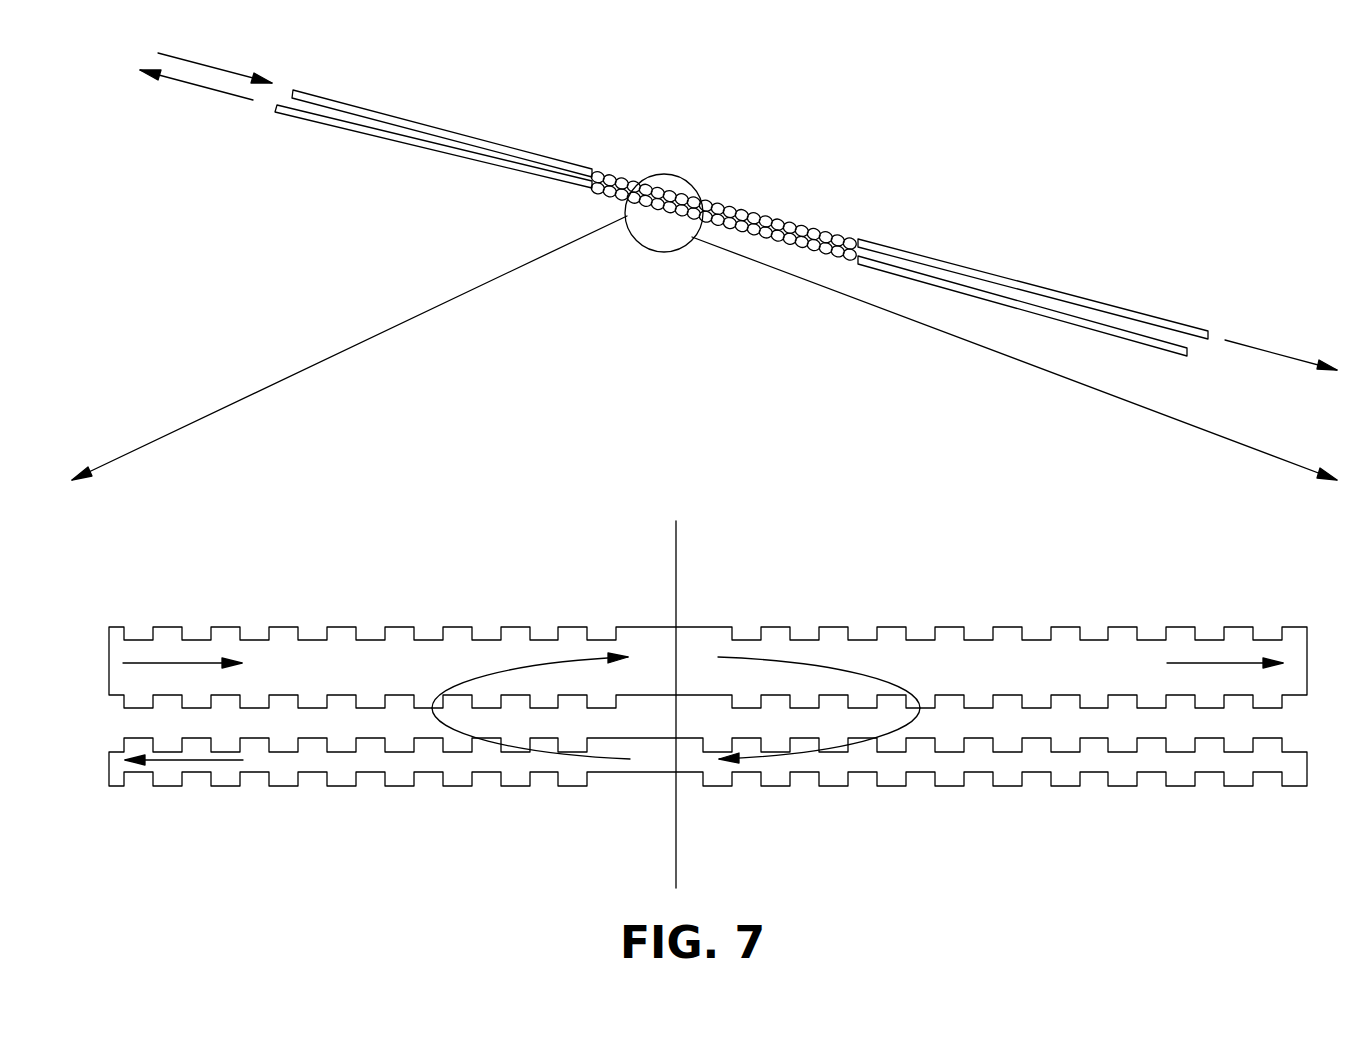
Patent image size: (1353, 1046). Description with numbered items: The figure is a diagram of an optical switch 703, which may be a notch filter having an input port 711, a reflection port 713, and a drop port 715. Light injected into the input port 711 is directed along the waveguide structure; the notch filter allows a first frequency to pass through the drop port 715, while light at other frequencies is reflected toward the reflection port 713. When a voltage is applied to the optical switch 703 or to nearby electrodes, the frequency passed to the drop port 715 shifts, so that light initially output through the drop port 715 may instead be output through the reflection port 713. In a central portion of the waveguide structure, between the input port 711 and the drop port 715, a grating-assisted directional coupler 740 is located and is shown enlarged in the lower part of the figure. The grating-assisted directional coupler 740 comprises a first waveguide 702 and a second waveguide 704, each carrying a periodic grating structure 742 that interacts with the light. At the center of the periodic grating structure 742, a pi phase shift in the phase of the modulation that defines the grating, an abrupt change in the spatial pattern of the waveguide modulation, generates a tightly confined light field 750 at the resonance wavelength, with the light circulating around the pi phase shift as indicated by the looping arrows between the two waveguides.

The optical switch 703 is at (786, 118).
The input port 711 is at (293, 89).
The reflection port 713 is at (275, 110).
The drop port 715 is at (1197, 340).
The grating-assisted directional coupler 740 is at (668, 177).
The first waveguide 702 is at (228, 626).
The second waveguide 704 is at (228, 787).
The periodic grating structure 742 is at (1060, 627).
The tightly confined light field 750 is at (770, 757).